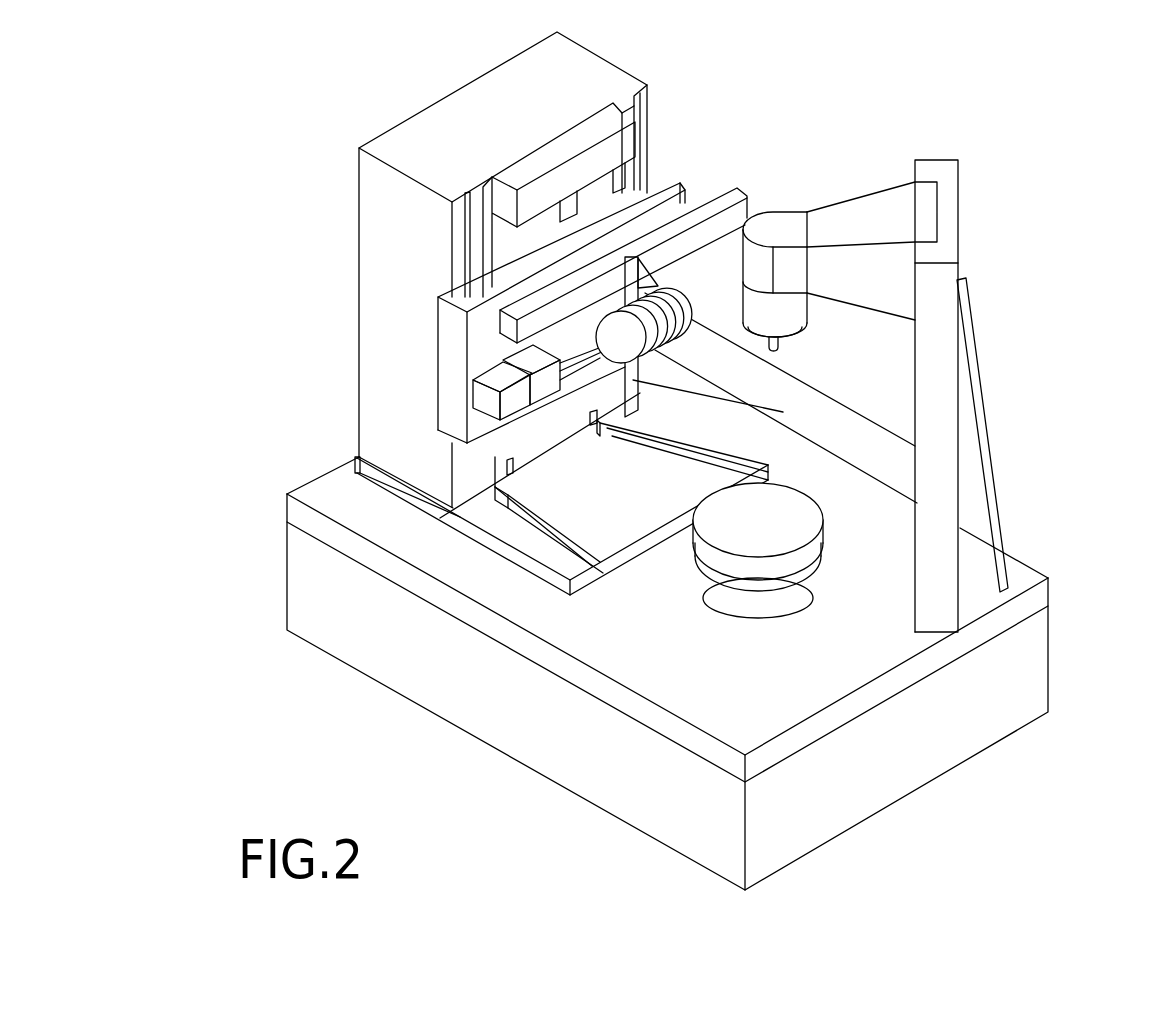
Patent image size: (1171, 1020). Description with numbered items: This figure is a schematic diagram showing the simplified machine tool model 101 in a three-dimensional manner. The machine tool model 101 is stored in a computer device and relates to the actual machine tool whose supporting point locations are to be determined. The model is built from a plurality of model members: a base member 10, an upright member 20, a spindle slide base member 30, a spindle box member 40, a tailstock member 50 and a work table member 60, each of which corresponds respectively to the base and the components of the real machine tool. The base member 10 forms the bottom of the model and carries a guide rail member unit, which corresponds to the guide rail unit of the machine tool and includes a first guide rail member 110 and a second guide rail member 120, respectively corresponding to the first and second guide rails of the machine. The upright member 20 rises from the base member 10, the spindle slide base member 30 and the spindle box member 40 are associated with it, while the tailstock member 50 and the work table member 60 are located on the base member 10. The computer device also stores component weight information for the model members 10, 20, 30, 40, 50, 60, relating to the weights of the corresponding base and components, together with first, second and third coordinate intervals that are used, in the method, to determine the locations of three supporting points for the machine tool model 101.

The base member 10 is at (1040, 675).
The upright member 20 is at (420, 118).
The spindle slide base member 30 is at (670, 180).
The spindle box member 40 is at (750, 213).
The tailstock member 50 is at (952, 253).
The work table member 60 is at (812, 508).
The machine tool model 101 is at (1008, 122).
The first guide rail member 110 is at (680, 447).
The second guide rail member 120 is at (515, 518).